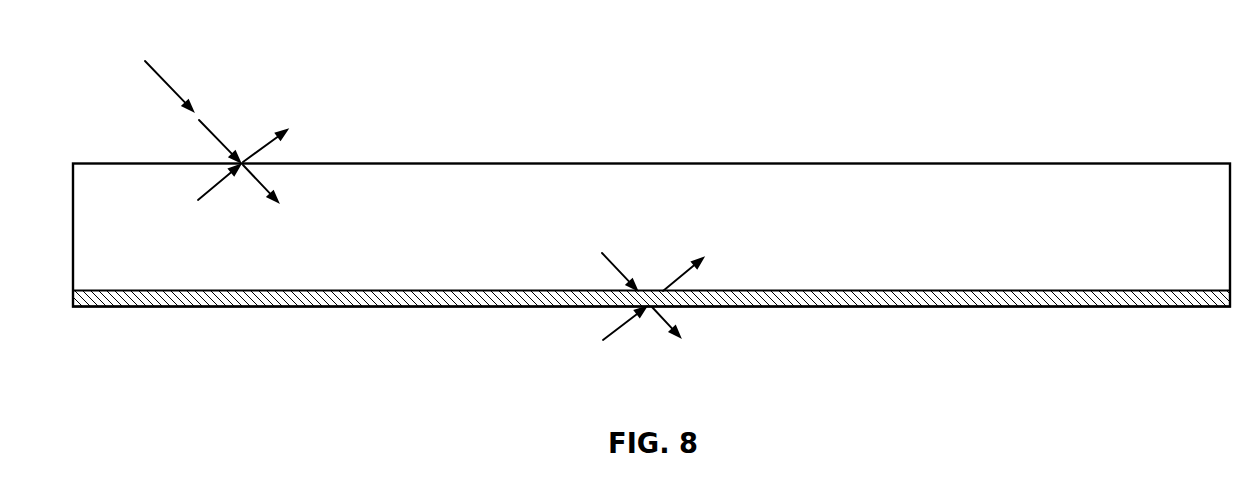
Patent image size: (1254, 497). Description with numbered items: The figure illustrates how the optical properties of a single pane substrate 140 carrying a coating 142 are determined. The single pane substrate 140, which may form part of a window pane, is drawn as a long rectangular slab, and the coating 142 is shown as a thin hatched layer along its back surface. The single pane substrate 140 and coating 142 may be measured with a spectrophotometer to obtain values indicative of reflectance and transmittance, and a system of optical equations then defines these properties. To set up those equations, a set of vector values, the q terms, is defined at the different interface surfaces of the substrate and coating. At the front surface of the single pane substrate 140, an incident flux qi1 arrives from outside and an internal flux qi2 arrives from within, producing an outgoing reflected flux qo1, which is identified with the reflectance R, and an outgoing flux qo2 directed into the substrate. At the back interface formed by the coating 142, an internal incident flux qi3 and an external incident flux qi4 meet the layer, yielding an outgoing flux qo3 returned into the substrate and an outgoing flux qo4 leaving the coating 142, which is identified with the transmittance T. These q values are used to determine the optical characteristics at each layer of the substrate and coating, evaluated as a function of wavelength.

The single pane substrate 140 is at (1048, 164).
The coating 142 is at (1048, 306).
The incident flux on front surface (external) qi1 is at (192, 111).
The reflected flux R from front surface qo1 is at (316, 133).
The incident flux on front surface (internal) qi2 is at (208, 199).
The flux transmitted into substrate at front surface qo2 is at (288, 199).
The incident flux on back coating (internal) qi3 is at (592, 266).
The flux reflected from back coating qo3 is at (711, 257).
The incident flux on back coating (external) qi4 is at (610, 341).
The transmitted flux T through back coating qo4 is at (717, 340).